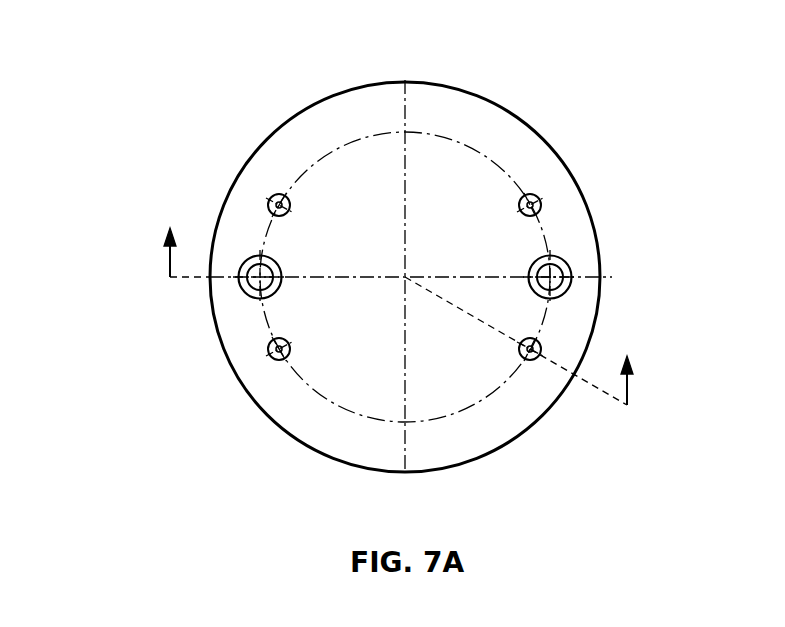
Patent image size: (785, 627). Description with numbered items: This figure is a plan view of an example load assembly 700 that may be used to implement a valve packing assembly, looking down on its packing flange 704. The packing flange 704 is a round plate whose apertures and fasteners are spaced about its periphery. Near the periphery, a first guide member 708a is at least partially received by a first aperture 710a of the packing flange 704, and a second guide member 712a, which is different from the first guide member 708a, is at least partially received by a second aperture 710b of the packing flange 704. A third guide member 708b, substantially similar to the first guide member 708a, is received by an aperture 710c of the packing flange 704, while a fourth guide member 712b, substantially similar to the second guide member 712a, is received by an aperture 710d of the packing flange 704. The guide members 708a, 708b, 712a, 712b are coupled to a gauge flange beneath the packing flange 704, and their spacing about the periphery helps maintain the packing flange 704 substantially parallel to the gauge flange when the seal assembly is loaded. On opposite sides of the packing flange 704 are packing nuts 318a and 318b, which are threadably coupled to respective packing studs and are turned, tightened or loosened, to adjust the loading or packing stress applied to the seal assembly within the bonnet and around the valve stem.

The load assembly 700 is at (125, 90).
The packing flange 704 is at (523, 120).
The first guide member 708a is at (527, 361).
The third guide member 708b is at (268, 203).
The first aperture 710a is at (533, 361).
The second aperture 710b is at (290, 349).
The aperture 710c is at (290, 206).
The aperture 710d is at (519, 206).
The second guide member 712a is at (278, 360).
The fourth guide member 712b is at (541, 203).
The packing nut 318a is at (572, 270).
The packing nut 318b is at (243, 293).